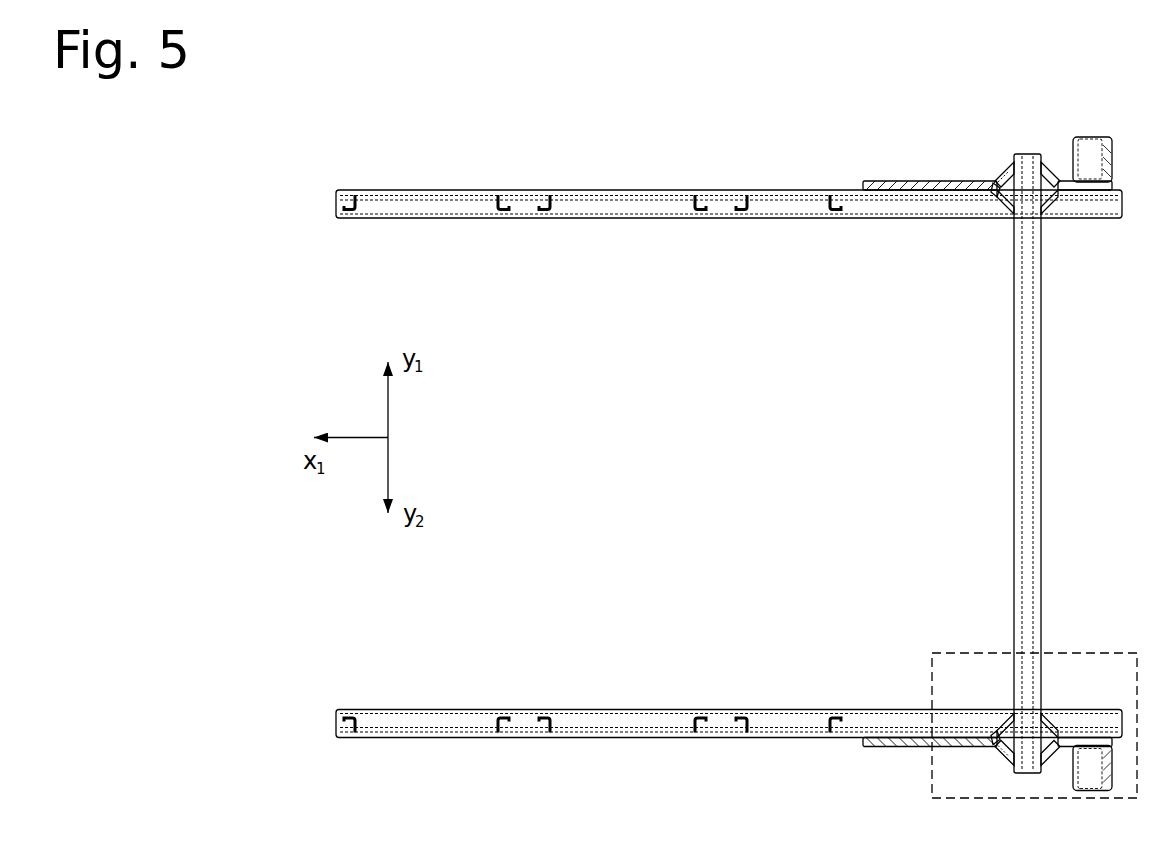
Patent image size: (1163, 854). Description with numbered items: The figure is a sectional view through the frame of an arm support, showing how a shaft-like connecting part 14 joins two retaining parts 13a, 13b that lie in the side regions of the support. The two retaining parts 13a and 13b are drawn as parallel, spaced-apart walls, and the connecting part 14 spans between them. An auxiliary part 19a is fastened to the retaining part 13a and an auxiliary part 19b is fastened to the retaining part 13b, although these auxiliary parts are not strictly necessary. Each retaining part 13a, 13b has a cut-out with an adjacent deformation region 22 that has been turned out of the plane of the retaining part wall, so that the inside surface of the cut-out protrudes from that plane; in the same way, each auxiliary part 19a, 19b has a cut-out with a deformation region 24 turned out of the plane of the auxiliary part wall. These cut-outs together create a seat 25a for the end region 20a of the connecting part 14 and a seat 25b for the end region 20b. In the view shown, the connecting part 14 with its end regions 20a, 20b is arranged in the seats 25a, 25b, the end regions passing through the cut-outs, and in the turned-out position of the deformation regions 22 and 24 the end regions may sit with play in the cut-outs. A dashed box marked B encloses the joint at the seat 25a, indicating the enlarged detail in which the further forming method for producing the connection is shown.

The retaining part 13a is at (597, 720).
The retaining part 13b is at (620, 208).
The connecting part 14 is at (1017, 463).
The auxiliary part 19a is at (893, 747).
The auxiliary part 19b is at (895, 183).
The end region 20a is at (1011, 699).
The end region 20b is at (1013, 225).
The deformation region 22 is at (998, 202).
The deformation region 24 is at (1003, 167).
The seat 25a is at (1050, 727).
The seat 25b is at (1050, 203).
The detail region B is at (968, 653).